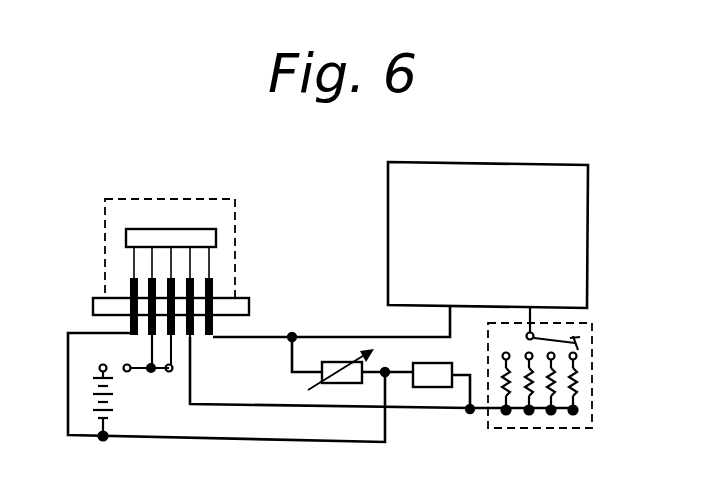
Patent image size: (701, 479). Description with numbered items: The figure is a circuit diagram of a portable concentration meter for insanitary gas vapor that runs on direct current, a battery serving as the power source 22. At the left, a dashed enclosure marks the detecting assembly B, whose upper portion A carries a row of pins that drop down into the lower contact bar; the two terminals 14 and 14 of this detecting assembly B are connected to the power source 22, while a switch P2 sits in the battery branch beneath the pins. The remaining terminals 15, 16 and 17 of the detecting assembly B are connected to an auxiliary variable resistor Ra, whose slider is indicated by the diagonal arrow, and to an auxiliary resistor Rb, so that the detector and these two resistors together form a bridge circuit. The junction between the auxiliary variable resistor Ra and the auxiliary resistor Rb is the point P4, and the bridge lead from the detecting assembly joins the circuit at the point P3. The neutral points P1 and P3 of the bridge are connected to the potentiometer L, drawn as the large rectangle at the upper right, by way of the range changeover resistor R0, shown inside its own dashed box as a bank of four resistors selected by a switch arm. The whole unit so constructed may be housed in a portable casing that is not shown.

The armature bar A is at (168, 228).
The detecting assembly B is at (82, 214).
The terminal 14 is at (150, 279).
The terminal 15 is at (213, 284).
The terminal 16 is at (171, 337).
The terminal 17 is at (190, 337).
The power source 22 is at (112, 404).
The potentiometer L is at (585, 236).
The neutral point P1 is at (469, 414).
The switch P2 is at (169, 372).
The neutral point P3 is at (292, 334).
The terminal point P4 is at (386, 368).
The auxiliary variable resistor Ra is at (335, 361).
The auxiliary resistor Rb is at (433, 389).
The range changeover resistor R0 is at (632, 391).